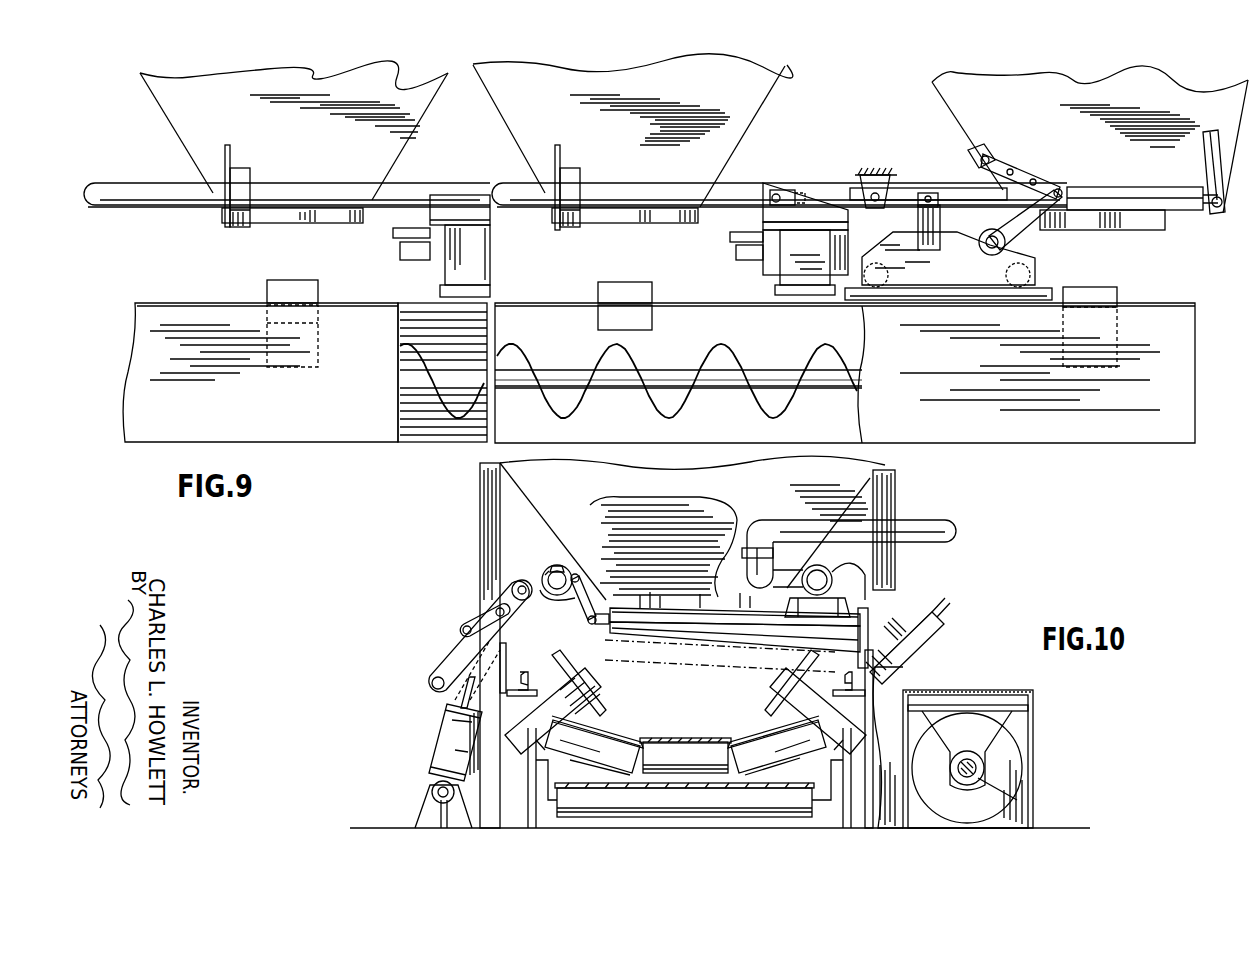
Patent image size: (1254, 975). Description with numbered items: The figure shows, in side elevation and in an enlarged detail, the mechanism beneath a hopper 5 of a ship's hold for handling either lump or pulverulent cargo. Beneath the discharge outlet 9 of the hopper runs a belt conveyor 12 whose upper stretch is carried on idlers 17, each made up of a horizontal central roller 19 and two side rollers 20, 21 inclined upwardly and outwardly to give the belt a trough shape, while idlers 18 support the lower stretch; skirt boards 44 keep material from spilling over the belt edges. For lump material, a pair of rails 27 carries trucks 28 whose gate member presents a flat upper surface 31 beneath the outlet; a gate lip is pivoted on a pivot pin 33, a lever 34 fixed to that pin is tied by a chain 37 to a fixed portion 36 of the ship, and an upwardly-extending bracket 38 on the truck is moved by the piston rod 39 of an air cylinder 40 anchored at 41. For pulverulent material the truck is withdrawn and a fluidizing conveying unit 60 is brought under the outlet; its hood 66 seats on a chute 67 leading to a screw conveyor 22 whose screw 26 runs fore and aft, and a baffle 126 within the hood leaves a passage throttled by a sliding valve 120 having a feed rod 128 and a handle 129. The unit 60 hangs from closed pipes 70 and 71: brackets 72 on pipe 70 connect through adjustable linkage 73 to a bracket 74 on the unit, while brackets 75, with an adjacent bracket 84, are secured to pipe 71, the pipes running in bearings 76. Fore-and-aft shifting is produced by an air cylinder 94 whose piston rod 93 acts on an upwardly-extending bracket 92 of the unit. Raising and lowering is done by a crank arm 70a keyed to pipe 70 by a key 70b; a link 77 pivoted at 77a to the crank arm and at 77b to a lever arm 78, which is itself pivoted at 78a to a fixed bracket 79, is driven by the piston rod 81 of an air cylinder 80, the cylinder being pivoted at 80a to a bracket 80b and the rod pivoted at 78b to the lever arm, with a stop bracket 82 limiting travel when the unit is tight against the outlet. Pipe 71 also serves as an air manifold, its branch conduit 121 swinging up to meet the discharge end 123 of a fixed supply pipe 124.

In FIG. 9, the hopper 5 is at (430, 106).
In FIG. 10, the hopper 5 is at (540, 512).
In FIG. 10, the discharge outlet 9 is at (637, 612).
In FIG. 10, the belt conveyor 12 is at (660, 740).
In FIG. 10, the idlers 17 is at (685, 766).
In FIG. 10, the idlers 18 is at (575, 773).
In FIG. 10, the central roller 19 is at (685, 755).
In FIG. 10, the side roller 20 is at (598, 750).
In FIG. 10, the side roller 21 is at (793, 748).
In FIG. 9, the screw conveyor 22 is at (340, 416).
In FIG. 10, the screw conveyor 22 is at (982, 685).
In FIG. 9, the screw conveyor 26 is at (628, 400).
In FIG. 10, the screw conveyor 26 is at (962, 775).
In FIG. 9, the rails 27 is at (1050, 293).
In FIG. 9, the truck 28 is at (1025, 258).
In FIG. 9, the upper surface 31 is at (962, 232).
In FIG. 9, the pivot pin 33 is at (985, 255).
In FIG. 9, the lever 34 is at (1045, 225).
In FIG. 9, the fixed portion of the ship 36 is at (1003, 158).
In FIG. 9, the chain 37 is at (1030, 172).
In FIG. 9, the bracket 38 is at (925, 245).
In FIG. 9, the piston rod 39 is at (948, 192).
In FIG. 9, the air cylinder 40 is at (1115, 195).
In FIG. 9, the anchor 41 is at (1220, 212).
In FIG. 10, the skirt boards 44 is at (602, 706).
In FIG. 9, the fluidizing conveying unit 60 is at (398, 245).
In FIG. 10, the fluidizing conveying unit 60 is at (738, 652).
In FIG. 10, the hood 66 is at (918, 660).
In FIG. 9, the chute 67 is at (320, 312).
In FIG. 10, the chute 67 is at (895, 721).
In FIG. 10, the pipe 70 is at (548, 592).
In FIG. 10, the crank arm 70a is at (565, 566).
In FIG. 10, the key 70b is at (552, 566).
In FIG. 9, the pipe 71 is at (155, 190).
In FIG. 10, the pipe 71 is at (820, 568).
In FIG. 10, the bracket 72 is at (578, 574).
In FIG. 10, the adjustable linkage 73 is at (594, 598).
In FIG. 10, the bracket 74 is at (592, 624).
In FIG. 9, the bracket 75 is at (490, 225).
In FIG. 9, the bearings 76 is at (250, 178).
In FIG. 10, the link 77 is at (455, 660).
In FIG. 10, the pivot connection 77a is at (521, 580).
In FIG. 10, the pivot connection 77b is at (430, 690).
In FIG. 10, the lever arm 78 is at (455, 632).
In FIG. 10, the pivot 78a is at (462, 625).
In FIG. 10, the pivot connection 78b is at (490, 608).
In FIG. 10, the bracket 79 is at (506, 660).
In FIG. 10, the air cylinder 80 is at (455, 742).
In FIG. 10, the pivot connection 80a is at (432, 790).
In FIG. 10, the bracket 80b is at (425, 812).
In FIG. 10, the piston rod 81 is at (478, 680).
In FIG. 10, the bracket 82 is at (468, 707).
In FIG. 9, the bracket 84 is at (393, 232).
In FIG. 9, the bracket 92 is at (763, 188).
In FIG. 9, the piston rod 93 is at (786, 190).
In FIG. 9, the air cylinder 94 is at (848, 195).
In FIG. 10, the sliding valve 120 is at (868, 640).
In FIG. 10, the branch conduit 121 is at (784, 572).
In FIG. 10, the discharge end 123 is at (762, 528).
In FIG. 10, the fixed pipe 124 is at (926, 525).
In FIG. 10, the baffle 126 is at (897, 625).
In FIG. 10, the feed rod 128 is at (918, 640).
In FIG. 10, the handle 129 is at (940, 614).